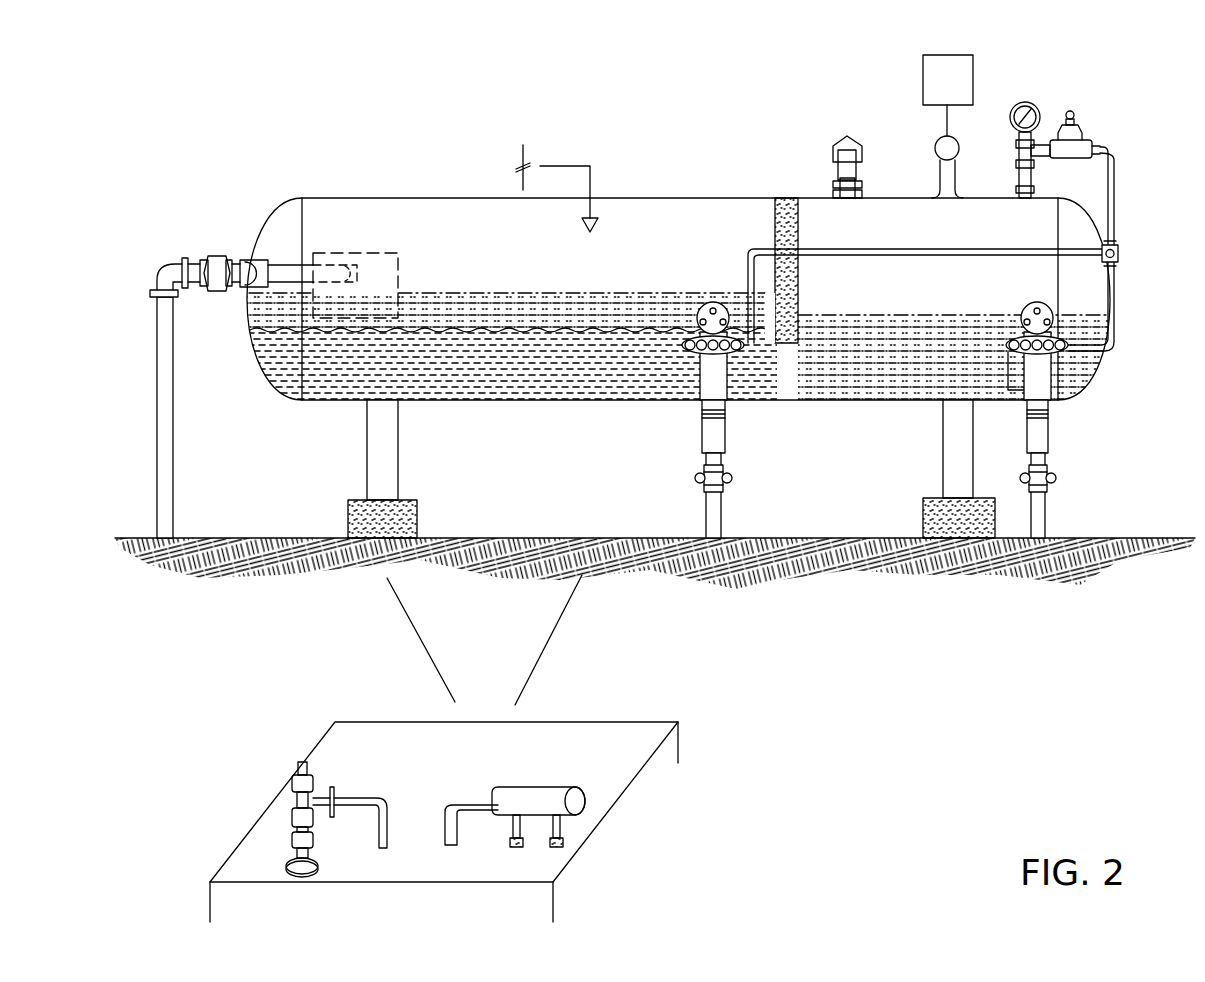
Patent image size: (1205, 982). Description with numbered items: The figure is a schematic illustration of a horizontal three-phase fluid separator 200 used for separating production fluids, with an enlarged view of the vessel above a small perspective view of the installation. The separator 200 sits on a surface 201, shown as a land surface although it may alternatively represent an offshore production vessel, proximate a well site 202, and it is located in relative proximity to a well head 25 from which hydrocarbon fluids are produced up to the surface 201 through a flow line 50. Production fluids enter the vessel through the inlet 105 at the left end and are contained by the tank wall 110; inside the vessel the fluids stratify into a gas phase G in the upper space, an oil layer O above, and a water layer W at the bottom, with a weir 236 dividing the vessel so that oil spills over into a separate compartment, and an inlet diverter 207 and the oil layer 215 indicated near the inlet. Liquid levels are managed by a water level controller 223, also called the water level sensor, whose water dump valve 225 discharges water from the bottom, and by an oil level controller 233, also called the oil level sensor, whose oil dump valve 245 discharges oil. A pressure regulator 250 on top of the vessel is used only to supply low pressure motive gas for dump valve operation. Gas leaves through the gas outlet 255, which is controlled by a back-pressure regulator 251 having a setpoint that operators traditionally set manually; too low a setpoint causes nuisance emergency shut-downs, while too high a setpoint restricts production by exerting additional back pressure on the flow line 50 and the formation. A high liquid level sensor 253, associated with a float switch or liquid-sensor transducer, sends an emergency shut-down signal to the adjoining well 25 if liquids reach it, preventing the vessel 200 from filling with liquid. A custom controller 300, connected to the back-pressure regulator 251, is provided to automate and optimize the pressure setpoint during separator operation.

The well head 25 is at (290, 812).
The flow line 50 is at (355, 797).
The inlet 105 is at (175, 490).
The tank wall 110 is at (268, 377).
The horizontal three-phase fluid separator 200 is at (440, 85).
The surface 201 is at (1158, 538).
The well site 202 is at (243, 723).
The inlet diverter 207 is at (368, 252).
The oil layer 215 is at (458, 304).
The water level controller 223 is at (713, 302).
The water dump valve 225 is at (713, 560).
The oil level controller 233 is at (1066, 318).
The weir 236 is at (775, 231).
The oil dump valve 245 is at (1033, 565).
The pressure regulator 250 is at (1020, 101).
The back-pressure regulator 251 is at (936, 147).
The high liquid level sensor 253 is at (583, 226).
The gas outlet 255 is at (940, 176).
The controller 300 is at (947, 55).
The gas G is at (457, 218).
The oil O is at (588, 304).
The water W is at (503, 383).